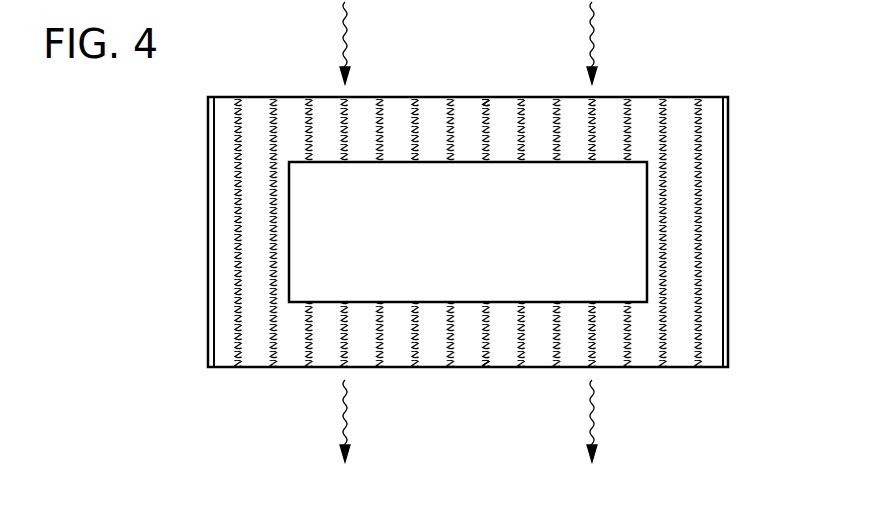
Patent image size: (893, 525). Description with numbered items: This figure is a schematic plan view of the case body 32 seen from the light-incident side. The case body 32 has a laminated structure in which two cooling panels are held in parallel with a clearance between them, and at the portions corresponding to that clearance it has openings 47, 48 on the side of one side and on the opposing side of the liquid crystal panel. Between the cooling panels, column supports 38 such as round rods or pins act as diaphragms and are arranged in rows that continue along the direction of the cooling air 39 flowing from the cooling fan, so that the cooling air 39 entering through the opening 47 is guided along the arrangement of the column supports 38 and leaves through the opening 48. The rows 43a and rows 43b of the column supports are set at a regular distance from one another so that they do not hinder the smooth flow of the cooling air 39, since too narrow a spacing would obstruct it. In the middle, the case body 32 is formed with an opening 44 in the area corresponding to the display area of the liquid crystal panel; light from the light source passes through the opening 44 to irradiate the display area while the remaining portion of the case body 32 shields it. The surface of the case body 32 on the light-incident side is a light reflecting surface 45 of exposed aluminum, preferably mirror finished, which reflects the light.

The case body 32 is at (711, 79).
The column supports 38 is at (459, 237).
The cooling air 39 is at (596, 36).
The rows of the column supports 43a is at (238, 367).
The rows of the column supports 43b is at (275, 367).
The opening 44 is at (646, 254).
The light reflecting surface 45 is at (682, 246).
The opening 47 is at (508, 97).
The opening 48 is at (508, 367).